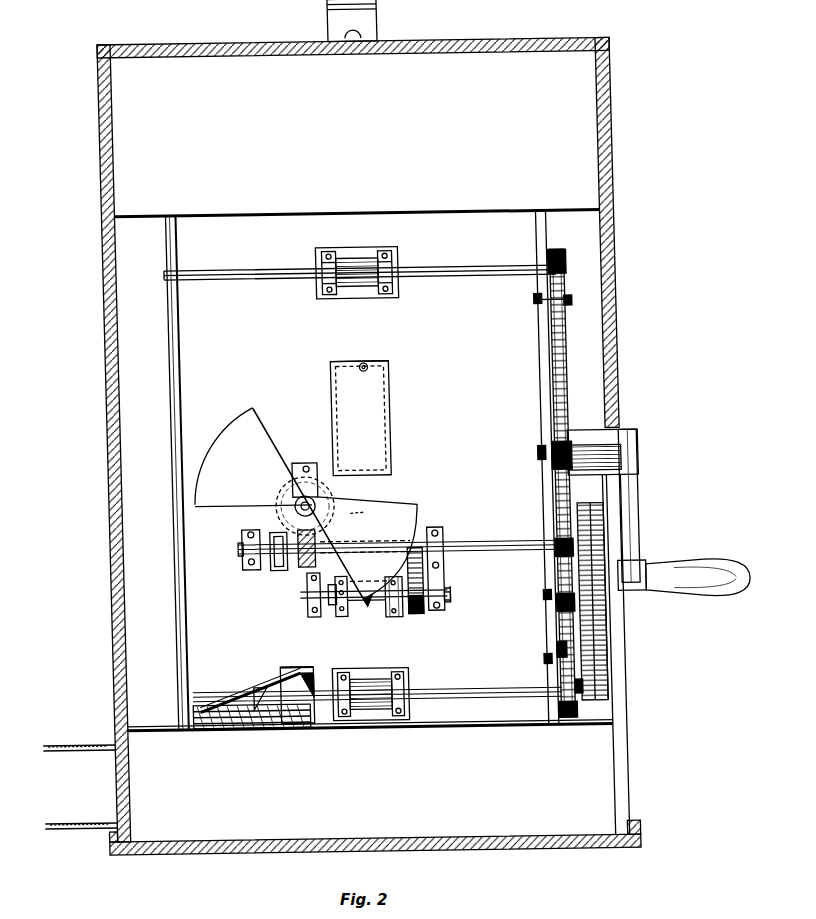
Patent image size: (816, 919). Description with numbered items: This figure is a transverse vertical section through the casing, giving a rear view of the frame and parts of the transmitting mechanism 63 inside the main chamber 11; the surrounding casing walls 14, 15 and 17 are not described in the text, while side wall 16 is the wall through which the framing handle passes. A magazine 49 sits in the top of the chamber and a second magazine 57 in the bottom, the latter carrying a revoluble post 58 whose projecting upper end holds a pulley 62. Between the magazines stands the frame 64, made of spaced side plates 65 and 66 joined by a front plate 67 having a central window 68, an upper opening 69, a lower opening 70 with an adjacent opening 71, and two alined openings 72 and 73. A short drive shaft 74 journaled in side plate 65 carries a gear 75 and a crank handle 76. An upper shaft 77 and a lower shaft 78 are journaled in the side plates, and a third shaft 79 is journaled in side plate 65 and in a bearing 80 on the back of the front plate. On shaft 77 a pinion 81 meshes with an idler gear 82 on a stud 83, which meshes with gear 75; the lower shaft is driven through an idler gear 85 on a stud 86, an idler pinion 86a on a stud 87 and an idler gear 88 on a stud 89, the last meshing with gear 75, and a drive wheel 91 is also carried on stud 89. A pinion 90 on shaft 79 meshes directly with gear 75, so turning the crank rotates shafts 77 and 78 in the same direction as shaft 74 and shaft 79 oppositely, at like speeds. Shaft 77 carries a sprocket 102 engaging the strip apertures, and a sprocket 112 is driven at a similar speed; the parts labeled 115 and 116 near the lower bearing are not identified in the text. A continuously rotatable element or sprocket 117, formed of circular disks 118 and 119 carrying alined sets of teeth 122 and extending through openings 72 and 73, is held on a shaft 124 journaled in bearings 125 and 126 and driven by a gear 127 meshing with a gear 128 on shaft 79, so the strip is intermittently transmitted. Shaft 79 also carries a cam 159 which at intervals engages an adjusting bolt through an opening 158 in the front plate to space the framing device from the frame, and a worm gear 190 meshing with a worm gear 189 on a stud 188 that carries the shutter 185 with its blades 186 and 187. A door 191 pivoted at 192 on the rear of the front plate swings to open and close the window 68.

The main section 11 is at (105, 416).
The bottom wall of casing 14 is at (227, 850).
The top wall of casing 15 is at (428, 52).
The side wall 16 is at (103, 297).
The right side wall of casing 17 is at (598, 280).
The magazine 49 is at (234, 220).
The second magazine 57 is at (493, 728).
The revoluble post 58 is at (237, 700).
The pulley 62 is at (197, 731).
The mechanism 63 is at (560, 440).
The frame 64 is at (163, 301).
The side plate 65 is at (537, 399).
The side plate 66 is at (177, 366).
The front plate 67 is at (191, 390).
The window 68 is at (386, 402).
The opening 69 is at (357, 273).
The second opening 70 is at (384, 707).
The opening 71 is at (274, 668).
The opening 72 is at (318, 615).
The opening 73 is at (392, 618).
The drive shaft 74 is at (527, 459).
The gear 75 is at (547, 467).
The crank handle 76 is at (626, 549).
The shaft 77 is at (452, 276).
The second shaft 78 is at (464, 696).
The third shaft 79 is at (487, 553).
The bearing 80 is at (229, 568).
The pinion 81 is at (553, 257).
The idler gear 82 is at (527, 307).
The stud 83 is at (561, 309).
The idler gear 85 is at (549, 724).
The stud 86 is at (562, 698).
The idler pinion 86a is at (541, 657).
The stud 87 is at (529, 667).
The idler gear 88 is at (542, 612).
The stud 89 is at (529, 603).
The pinion 90 is at (542, 555).
The drive wheel 91 is at (585, 633).
The sprocket 102 is at (351, 291).
The sprocket 112 is at (358, 716).
The housing 115 is at (292, 673).
The lever 116 is at (223, 708).
The continuously rotatable element 117 is at (326, 596).
The circular disk 118 is at (323, 620).
The circular disk 119 is at (380, 621).
The teeth 122 is at (314, 596).
The shaft 124 is at (436, 596).
The bearing 125 is at (293, 611).
The bearing 126 is at (436, 609).
The gear 127 is at (408, 619).
The gear 128 is at (420, 532).
The opening 158 is at (255, 540).
The cam 159 is at (261, 558).
The shutter 185 is at (243, 410).
The blade 186 is at (383, 510).
The blade 187 is at (232, 442).
The stud 188 is at (287, 503).
The worm gear 189 is at (338, 517).
The second worm gear 190 is at (305, 549).
The door 191 is at (377, 374).
The pivot 192 is at (356, 367).